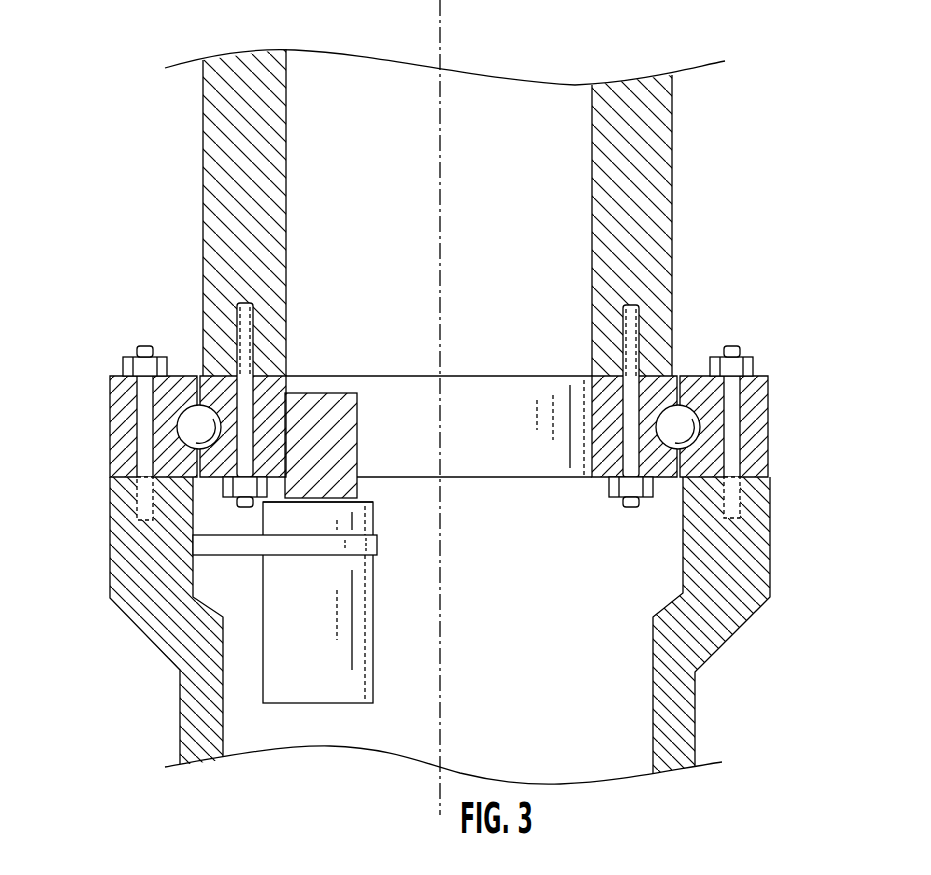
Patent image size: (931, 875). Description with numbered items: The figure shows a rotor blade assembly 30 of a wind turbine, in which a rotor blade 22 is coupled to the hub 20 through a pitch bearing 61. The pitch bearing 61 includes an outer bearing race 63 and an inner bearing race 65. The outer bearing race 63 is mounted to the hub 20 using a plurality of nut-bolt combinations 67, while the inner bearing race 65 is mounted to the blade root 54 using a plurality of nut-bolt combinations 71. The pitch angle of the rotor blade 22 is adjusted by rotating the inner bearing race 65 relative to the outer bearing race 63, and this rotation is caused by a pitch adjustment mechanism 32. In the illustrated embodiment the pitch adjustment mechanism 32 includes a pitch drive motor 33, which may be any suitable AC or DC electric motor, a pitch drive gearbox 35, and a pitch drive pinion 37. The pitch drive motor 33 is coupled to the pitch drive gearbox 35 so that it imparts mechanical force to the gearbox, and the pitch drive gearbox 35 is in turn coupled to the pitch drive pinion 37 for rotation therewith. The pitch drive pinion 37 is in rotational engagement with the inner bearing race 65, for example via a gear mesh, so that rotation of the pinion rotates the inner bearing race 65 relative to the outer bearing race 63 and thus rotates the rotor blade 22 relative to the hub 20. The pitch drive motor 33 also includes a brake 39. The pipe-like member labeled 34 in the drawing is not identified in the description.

The hub 20 is at (181, 748).
The rotor blade 22 is at (675, 185).
The rotor blade assembly 30 is at (119, 262).
The pitch adjustment mechanism 32 is at (347, 602).
The pitch drive motor 33 is at (357, 680).
The pipe 34 is at (440, 92).
The pitch drive gearbox 35 is at (360, 523).
The pitch drive pinion 37 is at (345, 455).
The brake 39 is at (310, 550).
The blade root 54 is at (213, 141).
The pitch bearing 61 is at (681, 358).
The outer bearing race 63 is at (768, 448).
The inner bearing race 65 is at (610, 470).
The nut-bolt combinations 67 is at (148, 420).
The nut-bolt combinations 71 is at (243, 416).